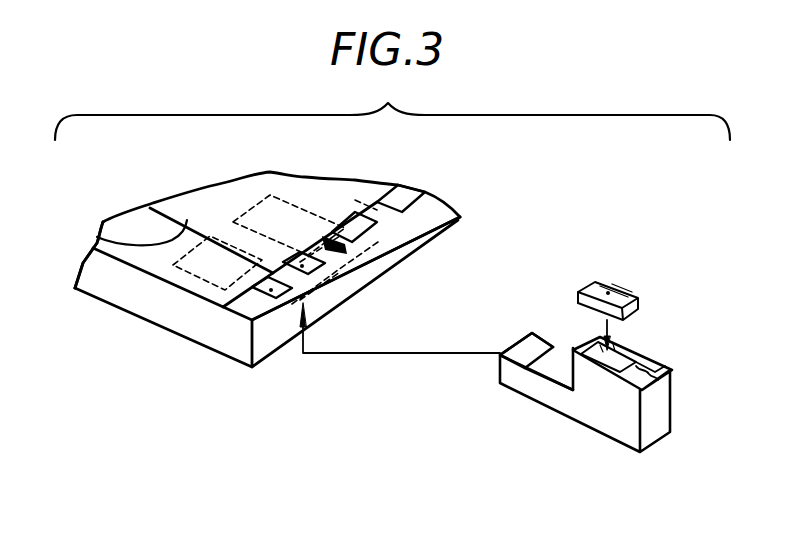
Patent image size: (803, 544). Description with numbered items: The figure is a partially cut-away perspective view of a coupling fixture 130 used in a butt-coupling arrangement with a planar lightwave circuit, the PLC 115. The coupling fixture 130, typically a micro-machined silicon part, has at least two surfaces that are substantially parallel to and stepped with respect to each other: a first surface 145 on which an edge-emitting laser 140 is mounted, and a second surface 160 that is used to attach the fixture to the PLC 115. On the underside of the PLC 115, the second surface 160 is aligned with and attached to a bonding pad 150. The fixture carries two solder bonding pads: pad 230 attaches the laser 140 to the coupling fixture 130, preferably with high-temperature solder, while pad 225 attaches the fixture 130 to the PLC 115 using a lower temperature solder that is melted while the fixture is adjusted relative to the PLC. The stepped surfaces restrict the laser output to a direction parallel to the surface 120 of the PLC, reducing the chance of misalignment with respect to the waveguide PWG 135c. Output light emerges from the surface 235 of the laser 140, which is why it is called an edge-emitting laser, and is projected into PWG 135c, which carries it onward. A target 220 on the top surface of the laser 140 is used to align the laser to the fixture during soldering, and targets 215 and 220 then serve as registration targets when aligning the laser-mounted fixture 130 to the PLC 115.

The PLC 115 is at (103, 221).
The surface 120 is at (187, 210).
The PWG 135c is at (97, 237).
The target 215 is at (283, 262).
The bonding pad 150 is at (240, 275).
The coupling fixture 130 is at (493, 454).
The solder bonding pad 225 is at (520, 352).
The second surface 160 is at (568, 358).
The solder bonding pad 230 is at (620, 354).
The first surface 145 is at (657, 357).
The edge-emitting laser 140 is at (636, 290).
The target 220 is at (608, 292).
The surface 235 is at (578, 290).